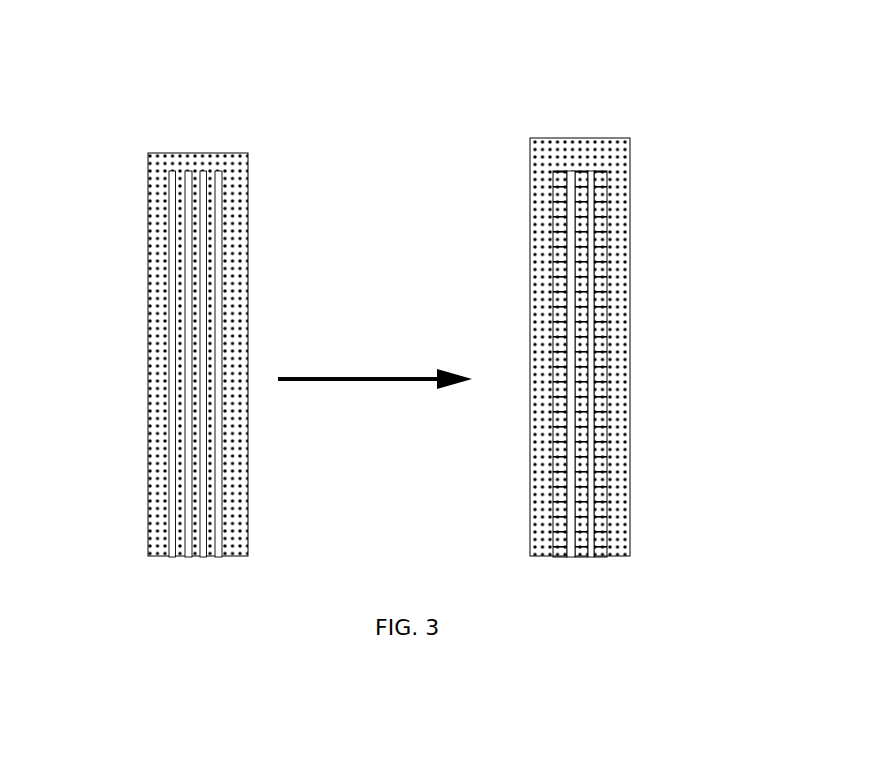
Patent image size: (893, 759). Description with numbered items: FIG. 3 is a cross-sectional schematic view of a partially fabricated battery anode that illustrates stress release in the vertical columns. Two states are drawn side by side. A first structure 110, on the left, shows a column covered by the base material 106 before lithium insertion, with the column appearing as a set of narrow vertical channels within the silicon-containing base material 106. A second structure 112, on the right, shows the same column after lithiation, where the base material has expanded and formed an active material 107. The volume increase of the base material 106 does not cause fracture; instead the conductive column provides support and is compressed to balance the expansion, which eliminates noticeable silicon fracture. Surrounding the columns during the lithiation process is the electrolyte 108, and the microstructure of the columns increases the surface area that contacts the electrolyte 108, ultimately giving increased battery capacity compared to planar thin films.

The first structure 110 is at (135, 288).
The second structure 112 is at (664, 292).
The base material 106 is at (152, 357).
The electrolyte 108 is at (647, 303).
The active material 107 is at (618, 400).